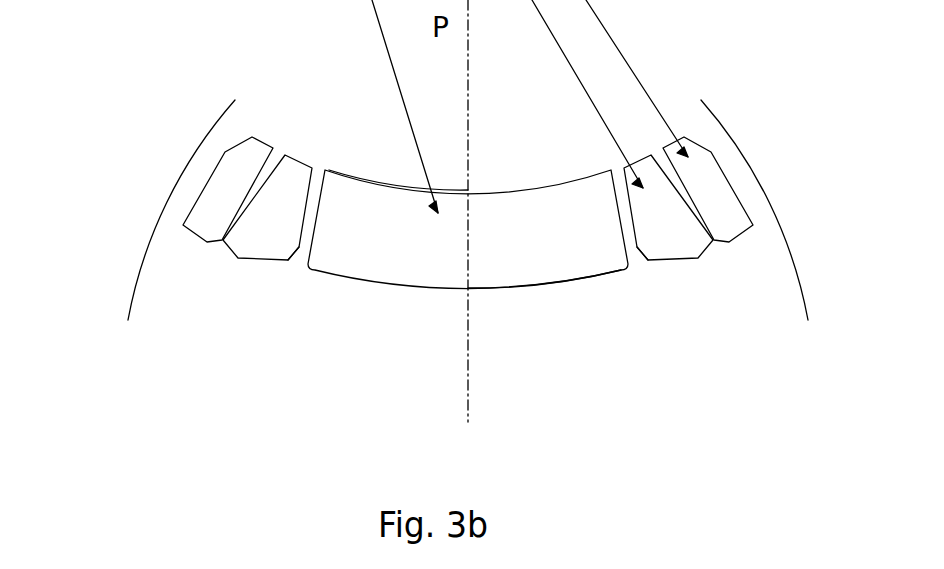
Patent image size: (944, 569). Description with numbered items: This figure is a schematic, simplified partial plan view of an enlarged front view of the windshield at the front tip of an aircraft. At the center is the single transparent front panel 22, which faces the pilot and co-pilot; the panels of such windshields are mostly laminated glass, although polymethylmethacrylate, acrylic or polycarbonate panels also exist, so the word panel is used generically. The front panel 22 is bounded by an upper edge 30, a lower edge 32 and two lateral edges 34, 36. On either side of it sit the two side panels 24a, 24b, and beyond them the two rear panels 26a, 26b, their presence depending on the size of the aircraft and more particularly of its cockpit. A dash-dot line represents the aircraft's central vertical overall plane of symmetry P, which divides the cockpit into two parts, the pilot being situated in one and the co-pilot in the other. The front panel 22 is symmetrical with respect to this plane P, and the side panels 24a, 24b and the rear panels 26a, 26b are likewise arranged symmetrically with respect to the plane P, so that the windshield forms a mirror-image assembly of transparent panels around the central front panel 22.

The front panel 22 is at (380, 262).
The side panel 24a is at (248, 238).
The side panel 24b is at (692, 250).
The rear panel 26a is at (238, 173).
The rear panel 26b is at (723, 207).
The upper edge 30 is at (368, 175).
The lower edge 32 is at (580, 273).
The lateral edge 34 is at (307, 243).
The lateral edge 36 is at (635, 238).